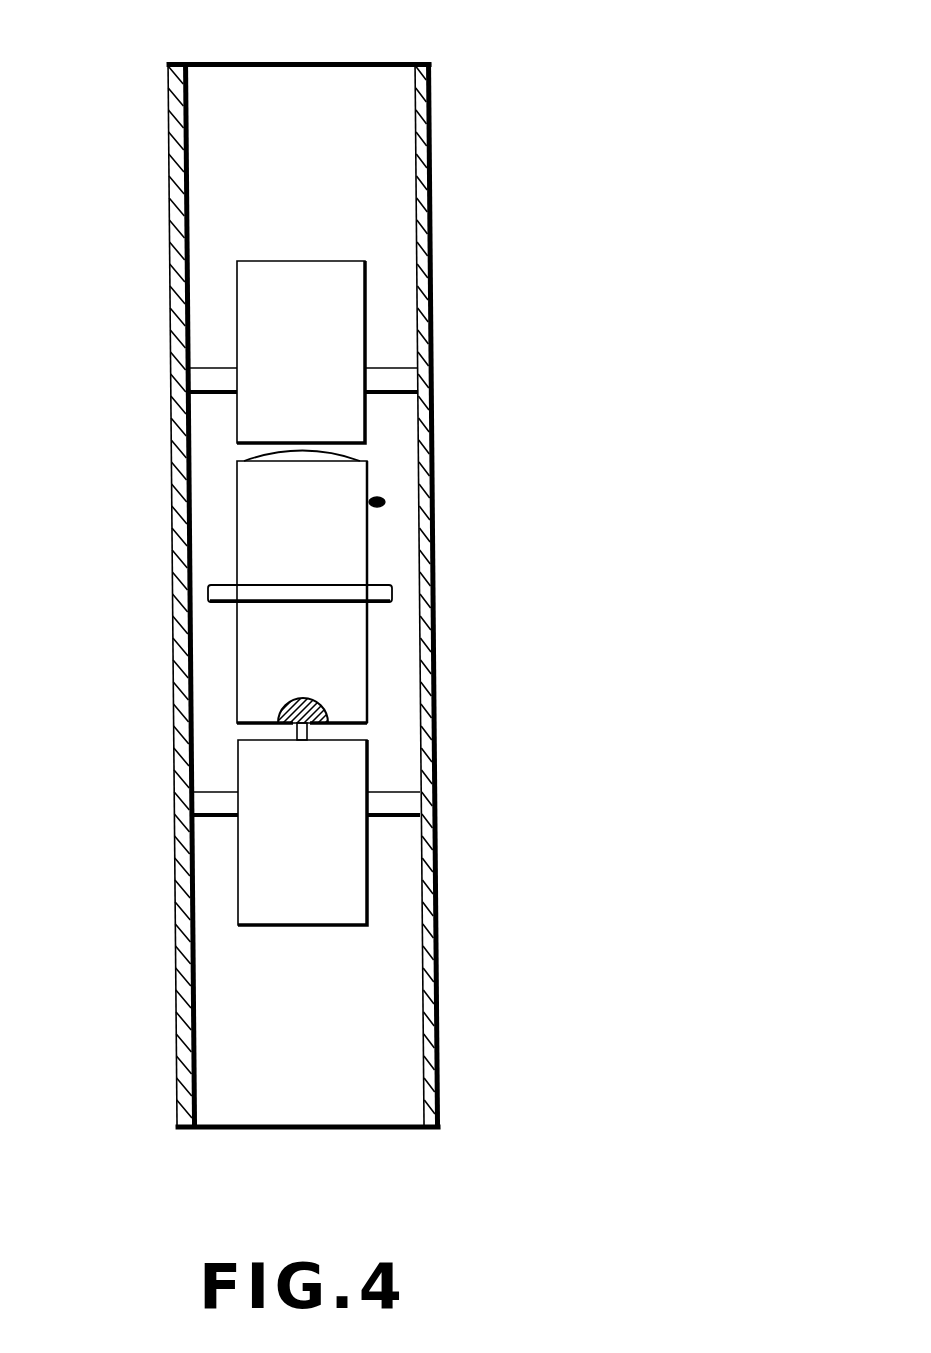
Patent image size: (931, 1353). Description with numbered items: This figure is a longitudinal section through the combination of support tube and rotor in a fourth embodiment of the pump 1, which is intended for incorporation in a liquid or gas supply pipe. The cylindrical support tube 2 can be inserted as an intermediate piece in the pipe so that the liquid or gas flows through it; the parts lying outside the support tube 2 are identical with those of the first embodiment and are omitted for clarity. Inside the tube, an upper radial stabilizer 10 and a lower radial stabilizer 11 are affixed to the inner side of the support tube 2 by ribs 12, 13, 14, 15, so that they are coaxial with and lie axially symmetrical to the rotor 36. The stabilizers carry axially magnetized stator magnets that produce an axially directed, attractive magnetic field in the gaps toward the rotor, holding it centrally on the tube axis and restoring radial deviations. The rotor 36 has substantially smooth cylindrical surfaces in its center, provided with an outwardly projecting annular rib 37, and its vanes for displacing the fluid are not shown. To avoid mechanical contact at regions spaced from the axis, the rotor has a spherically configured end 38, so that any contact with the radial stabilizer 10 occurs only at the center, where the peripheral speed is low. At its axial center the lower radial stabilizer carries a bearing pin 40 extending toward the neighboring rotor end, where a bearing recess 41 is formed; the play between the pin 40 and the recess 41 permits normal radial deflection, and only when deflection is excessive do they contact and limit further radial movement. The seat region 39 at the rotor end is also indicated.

The pump 1 is at (458, 66).
The support tube 2 is at (430, 137).
The radial stabilizer 10 is at (318, 273).
The radial stabilizer 11 is at (268, 905).
The rib 12 is at (205, 372).
The rib 13 is at (385, 375).
The rib 14 is at (213, 807).
The rib 15 is at (392, 808).
The rotor 36 is at (385, 502).
The annular rib 37 is at (372, 590).
The spherically configured end 38 is at (322, 457).
The seat opening 39 is at (337, 727).
The bearing pin 40 is at (300, 740).
The bearing recess 41 is at (310, 698).